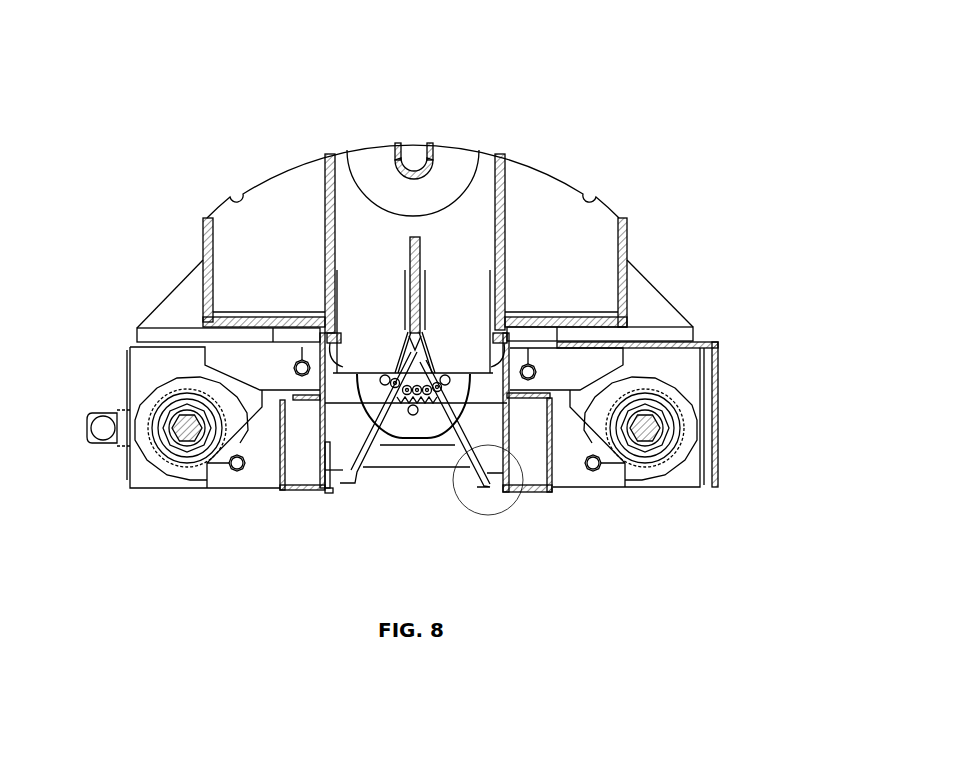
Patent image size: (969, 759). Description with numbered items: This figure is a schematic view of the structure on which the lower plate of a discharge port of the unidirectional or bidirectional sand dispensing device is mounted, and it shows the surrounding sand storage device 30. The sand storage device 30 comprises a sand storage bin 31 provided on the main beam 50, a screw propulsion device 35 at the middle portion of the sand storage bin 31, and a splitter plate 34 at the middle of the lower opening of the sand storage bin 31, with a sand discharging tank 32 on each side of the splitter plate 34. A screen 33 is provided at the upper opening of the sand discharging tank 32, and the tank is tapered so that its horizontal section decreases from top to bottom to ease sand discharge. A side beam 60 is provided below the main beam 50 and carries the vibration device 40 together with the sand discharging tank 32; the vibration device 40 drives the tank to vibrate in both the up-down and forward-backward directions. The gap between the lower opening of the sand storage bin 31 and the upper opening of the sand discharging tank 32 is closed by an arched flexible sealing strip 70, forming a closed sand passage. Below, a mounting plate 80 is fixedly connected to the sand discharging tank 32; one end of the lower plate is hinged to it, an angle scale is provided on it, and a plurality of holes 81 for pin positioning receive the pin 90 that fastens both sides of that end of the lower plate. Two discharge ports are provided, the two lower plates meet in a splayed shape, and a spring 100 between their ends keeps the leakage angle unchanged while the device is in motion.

The sand storage device 30 is at (513, 75).
The sand storage bin 31 is at (362, 230).
The sand discharging tank 32 is at (493, 428).
The screen 33 is at (467, 403).
The splitter plate 34 is at (413, 282).
The screw propulsion device 35 is at (445, 180).
The vibration device 40 is at (177, 428).
The main beam 50 is at (208, 278).
The side beam 60 is at (290, 483).
The flexible sealing strip 70 is at (327, 332).
The mounting plate 80 is at (452, 402).
The holes 81 is at (413, 415).
The pin 90 is at (425, 405).
The spring 100 is at (396, 405).